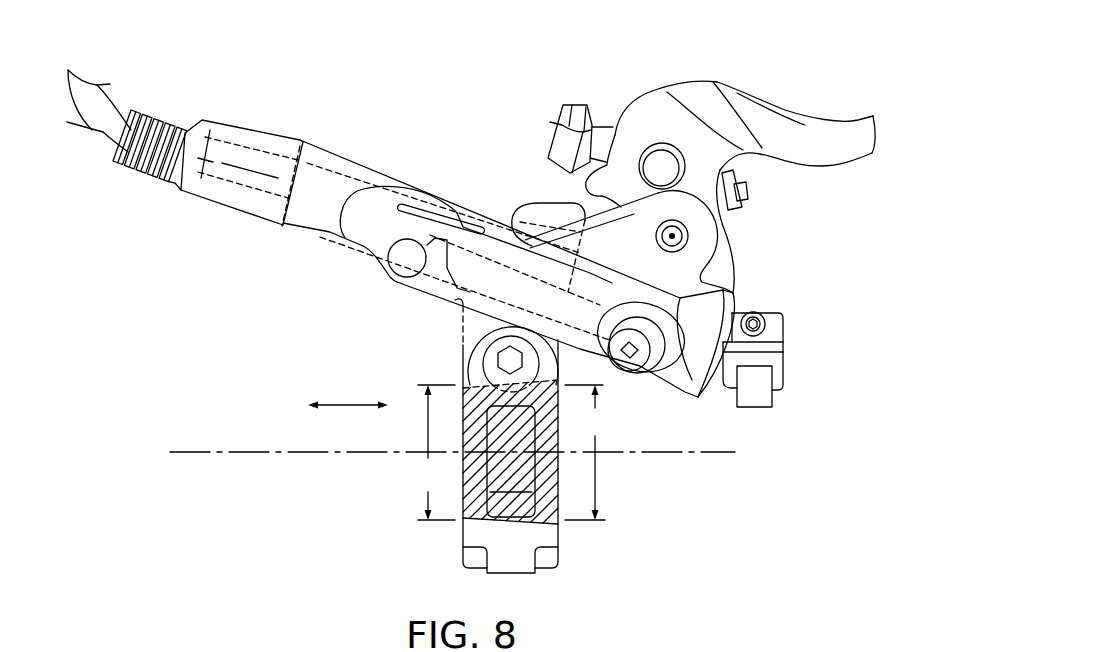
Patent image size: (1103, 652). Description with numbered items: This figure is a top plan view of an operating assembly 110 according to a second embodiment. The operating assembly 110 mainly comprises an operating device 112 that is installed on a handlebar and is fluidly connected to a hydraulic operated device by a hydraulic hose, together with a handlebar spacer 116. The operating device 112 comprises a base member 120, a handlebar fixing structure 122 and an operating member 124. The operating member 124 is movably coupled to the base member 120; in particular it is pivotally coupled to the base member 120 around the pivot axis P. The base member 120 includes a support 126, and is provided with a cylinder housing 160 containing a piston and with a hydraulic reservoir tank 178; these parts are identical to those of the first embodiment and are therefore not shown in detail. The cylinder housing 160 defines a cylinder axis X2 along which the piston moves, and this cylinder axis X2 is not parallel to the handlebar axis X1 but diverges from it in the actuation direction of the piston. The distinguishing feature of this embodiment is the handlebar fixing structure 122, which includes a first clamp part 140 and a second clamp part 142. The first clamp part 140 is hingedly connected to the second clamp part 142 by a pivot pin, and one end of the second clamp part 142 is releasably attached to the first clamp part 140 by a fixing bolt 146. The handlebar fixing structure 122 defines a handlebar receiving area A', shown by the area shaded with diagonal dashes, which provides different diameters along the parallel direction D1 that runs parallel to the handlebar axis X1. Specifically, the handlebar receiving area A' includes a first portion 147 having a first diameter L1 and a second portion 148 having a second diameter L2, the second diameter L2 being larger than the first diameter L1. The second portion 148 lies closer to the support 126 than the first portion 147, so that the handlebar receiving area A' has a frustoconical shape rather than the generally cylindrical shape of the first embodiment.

The operating assembly 110 is at (779, 28).
The operating device 112 is at (456, 130).
The handlebar spacer 116 is at (758, 413).
The base member 120 is at (582, 203).
The handlebar fixing structure 122 is at (454, 534).
The operating member 124 is at (807, 104).
The support 126 is at (795, 328).
The first clamp part 140 is at (546, 572).
The second clamp part 142 is at (538, 536).
The fixing bolt 146 is at (484, 338).
The first portion 147 is at (466, 368).
The second portion 148 is at (558, 334).
The cylinder housing 160 is at (392, 177).
The hydraulic reservoir tank 178 is at (426, 293).
The pivot axis P is at (676, 233).
The handlebar axis X1 is at (187, 458).
The cylinder axis X2 is at (245, 167).
The first diameter L1 is at (436, 452).
The second diameter L2 is at (585, 452).
The parallel direction D1 is at (356, 404).
The handlebar receiving area A' is at (523, 451).